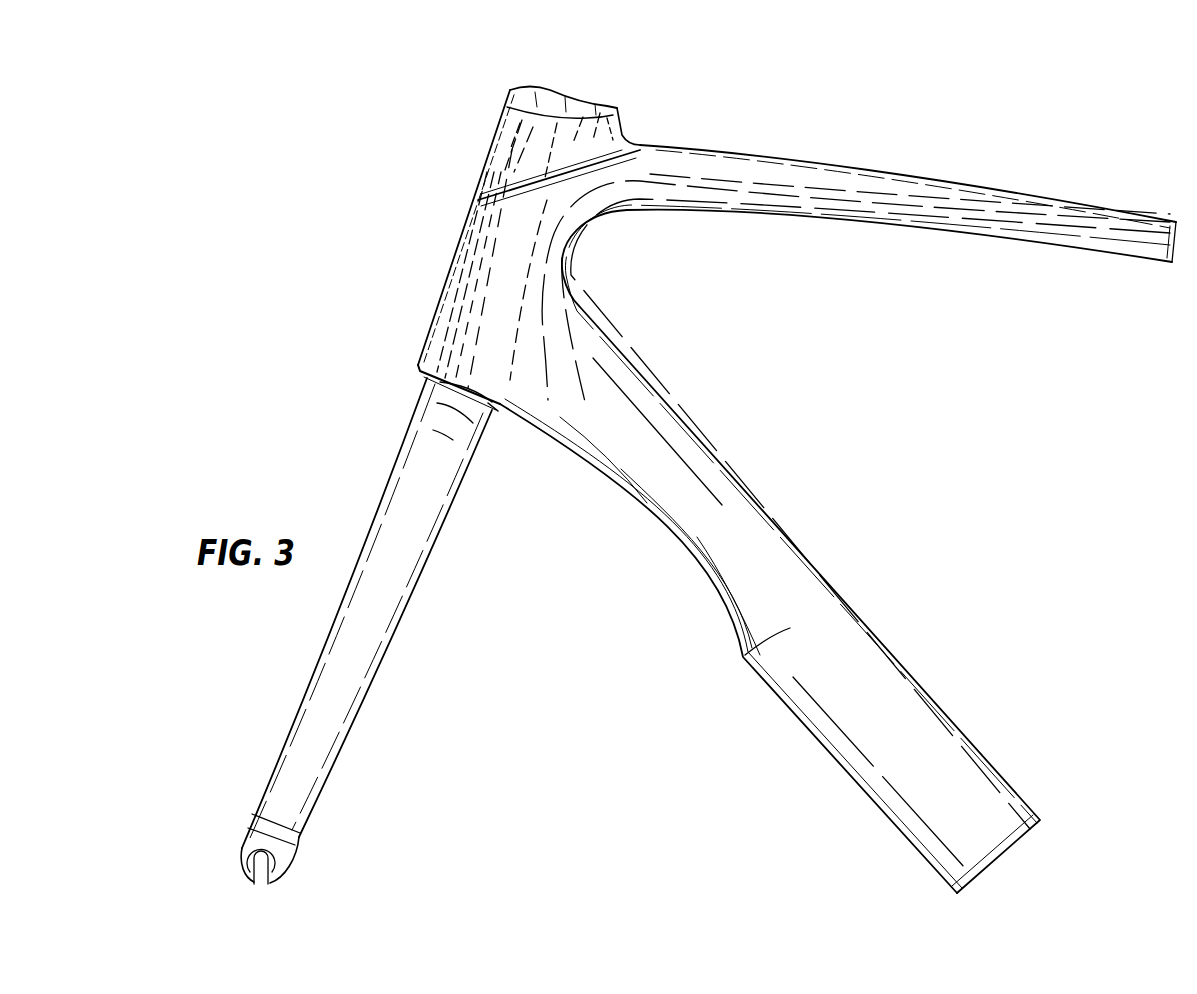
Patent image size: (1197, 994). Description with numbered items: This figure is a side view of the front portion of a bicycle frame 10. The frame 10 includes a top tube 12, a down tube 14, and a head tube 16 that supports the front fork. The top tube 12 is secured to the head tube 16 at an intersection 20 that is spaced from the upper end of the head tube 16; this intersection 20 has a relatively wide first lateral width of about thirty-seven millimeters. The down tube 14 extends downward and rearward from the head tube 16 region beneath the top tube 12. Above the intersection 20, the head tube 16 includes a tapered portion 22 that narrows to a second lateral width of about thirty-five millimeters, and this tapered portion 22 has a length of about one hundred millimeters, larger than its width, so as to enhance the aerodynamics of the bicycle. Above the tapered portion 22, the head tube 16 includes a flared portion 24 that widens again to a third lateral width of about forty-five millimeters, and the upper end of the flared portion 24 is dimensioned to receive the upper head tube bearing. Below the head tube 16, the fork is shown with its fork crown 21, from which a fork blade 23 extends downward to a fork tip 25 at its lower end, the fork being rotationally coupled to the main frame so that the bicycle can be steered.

The frame 10 is at (806, 82).
The top tube 12 is at (890, 190).
The down tube 14 is at (830, 640).
The head tube 16 is at (473, 247).
The intersection 20 is at (523, 173).
The fork crown 21 is at (492, 408).
The tapered portion 22 is at (537, 143).
The fork blades 23 is at (370, 623).
The flared portion 24 is at (543, 123).
The fork tips 25 is at (280, 870).